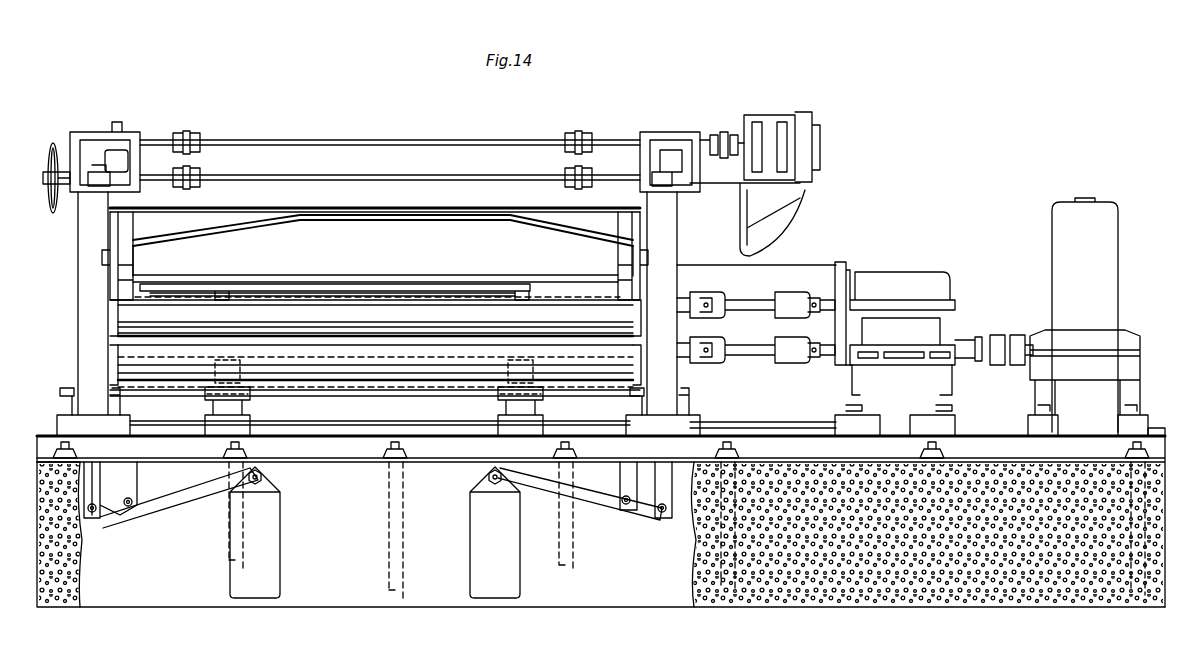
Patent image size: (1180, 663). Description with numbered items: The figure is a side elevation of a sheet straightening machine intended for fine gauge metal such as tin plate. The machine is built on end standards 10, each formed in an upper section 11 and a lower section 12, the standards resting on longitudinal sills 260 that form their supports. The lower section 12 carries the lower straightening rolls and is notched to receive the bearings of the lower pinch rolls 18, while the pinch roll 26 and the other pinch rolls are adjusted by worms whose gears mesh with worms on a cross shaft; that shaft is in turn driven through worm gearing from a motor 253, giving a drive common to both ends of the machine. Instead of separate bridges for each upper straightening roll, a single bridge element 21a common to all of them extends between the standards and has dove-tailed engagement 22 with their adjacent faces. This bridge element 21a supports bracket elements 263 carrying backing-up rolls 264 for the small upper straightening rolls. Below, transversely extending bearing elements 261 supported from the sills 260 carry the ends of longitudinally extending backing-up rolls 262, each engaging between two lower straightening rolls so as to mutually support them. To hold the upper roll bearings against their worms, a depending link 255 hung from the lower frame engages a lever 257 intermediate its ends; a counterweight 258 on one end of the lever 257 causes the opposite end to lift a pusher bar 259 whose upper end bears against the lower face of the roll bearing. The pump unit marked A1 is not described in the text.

The end standard 10 is at (78, 263).
The upper section 11 is at (704, 240).
The lower section 12 is at (741, 401).
The lower pinch roll 18 is at (118, 357).
The bridge element 21a is at (345, 218).
The dove-tailed engagement 22 is at (640, 212).
The pinch roll 26 is at (120, 305).
The motor A1 is at (850, 272).
The motor 253 is at (762, 114).
The depending link 255 is at (136, 478).
The lever 257 is at (165, 497).
The counterweight 258 is at (375, 532).
The pusher bar 259 is at (80, 478).
The longitudinal sill 260 is at (350, 455).
The bearing element 261 is at (252, 412).
The backing-up roll 262 is at (425, 382).
The bracket element 263 is at (222, 292).
The backing-up roll 264 is at (328, 300).